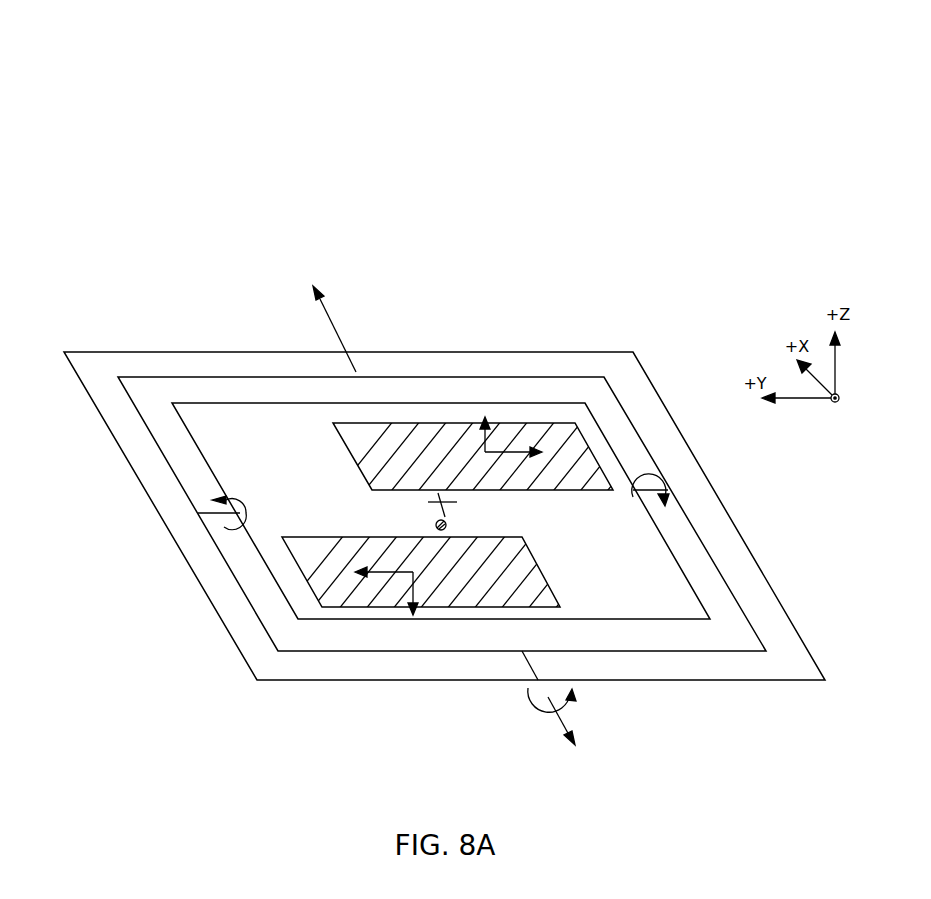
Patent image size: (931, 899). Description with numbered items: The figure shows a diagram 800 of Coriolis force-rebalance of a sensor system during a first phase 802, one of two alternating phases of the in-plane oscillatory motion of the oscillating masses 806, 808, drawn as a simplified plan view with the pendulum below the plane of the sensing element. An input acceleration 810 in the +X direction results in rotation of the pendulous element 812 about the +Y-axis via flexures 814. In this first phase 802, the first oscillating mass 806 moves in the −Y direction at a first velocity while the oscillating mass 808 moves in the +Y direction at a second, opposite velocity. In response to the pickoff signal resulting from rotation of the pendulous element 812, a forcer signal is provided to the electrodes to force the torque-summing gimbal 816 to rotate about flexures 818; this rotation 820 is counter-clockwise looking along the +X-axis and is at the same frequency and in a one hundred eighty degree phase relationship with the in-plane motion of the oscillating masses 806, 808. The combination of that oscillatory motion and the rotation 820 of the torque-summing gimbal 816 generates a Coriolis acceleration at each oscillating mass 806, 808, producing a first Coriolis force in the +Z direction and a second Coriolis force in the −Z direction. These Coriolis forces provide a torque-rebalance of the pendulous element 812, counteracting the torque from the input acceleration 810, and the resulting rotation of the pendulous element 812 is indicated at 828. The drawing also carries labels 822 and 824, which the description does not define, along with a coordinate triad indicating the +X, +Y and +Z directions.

The diagram 800 is at (116, 102).
The first phase 802 is at (107, 330).
The first oscillating mass 806 is at (352, 445).
The oscillating mass 808 is at (375, 530).
The input acceleration 810 is at (340, 278).
The pendulous element 812 is at (215, 475).
The flexures 814 is at (200, 510).
The torque-summing gimbal 816 is at (242, 375).
The flexures 818 is at (358, 377).
The rotation of the torque-summing gimbal 820 is at (500, 708).
The rotation direction 822 is at (239, 551).
The outer frame side 824 is at (657, 383).
The rotation of the pendulous element 828 is at (692, 465).